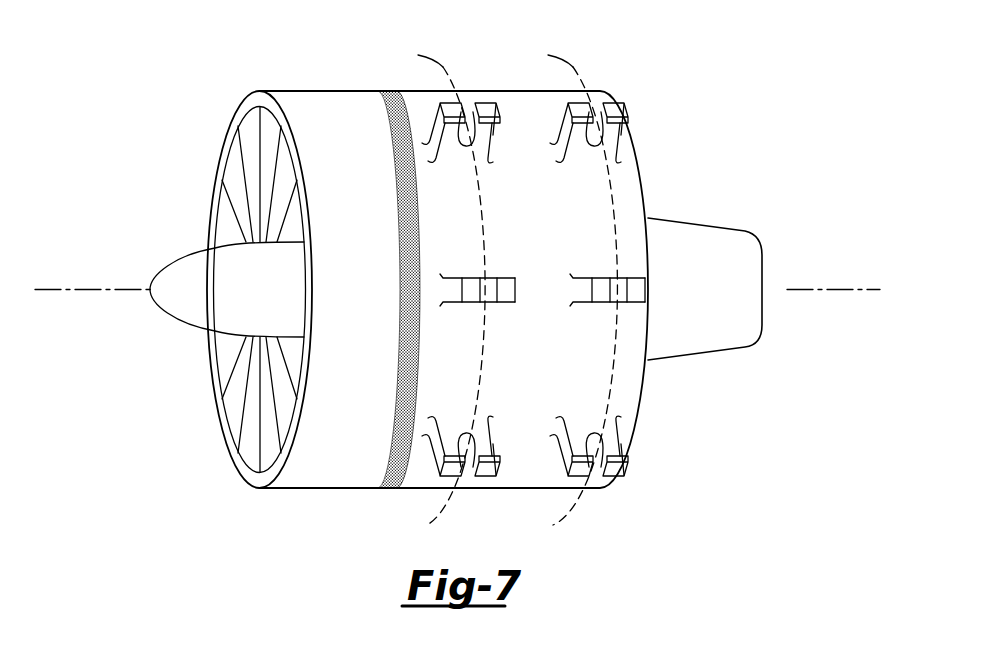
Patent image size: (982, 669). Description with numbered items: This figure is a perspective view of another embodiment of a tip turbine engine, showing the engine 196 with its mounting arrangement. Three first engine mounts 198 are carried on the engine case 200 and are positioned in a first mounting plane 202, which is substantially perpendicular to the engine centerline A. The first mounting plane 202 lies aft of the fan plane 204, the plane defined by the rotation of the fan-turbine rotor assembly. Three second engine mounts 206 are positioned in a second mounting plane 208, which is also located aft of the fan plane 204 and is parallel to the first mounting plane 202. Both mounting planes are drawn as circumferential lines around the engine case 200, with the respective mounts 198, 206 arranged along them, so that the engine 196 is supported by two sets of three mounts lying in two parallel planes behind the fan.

The engine 196 is at (193, 410).
The first engine mounts 198 is at (490, 141).
The engine case 200 is at (306, 488).
The first mounting plane 202 is at (440, 62).
The fan plane 204 is at (399, 246).
The second engine mounts 206 is at (648, 281).
The second mounting plane 208 is at (571, 62).
The engine centerline A is at (838, 294).